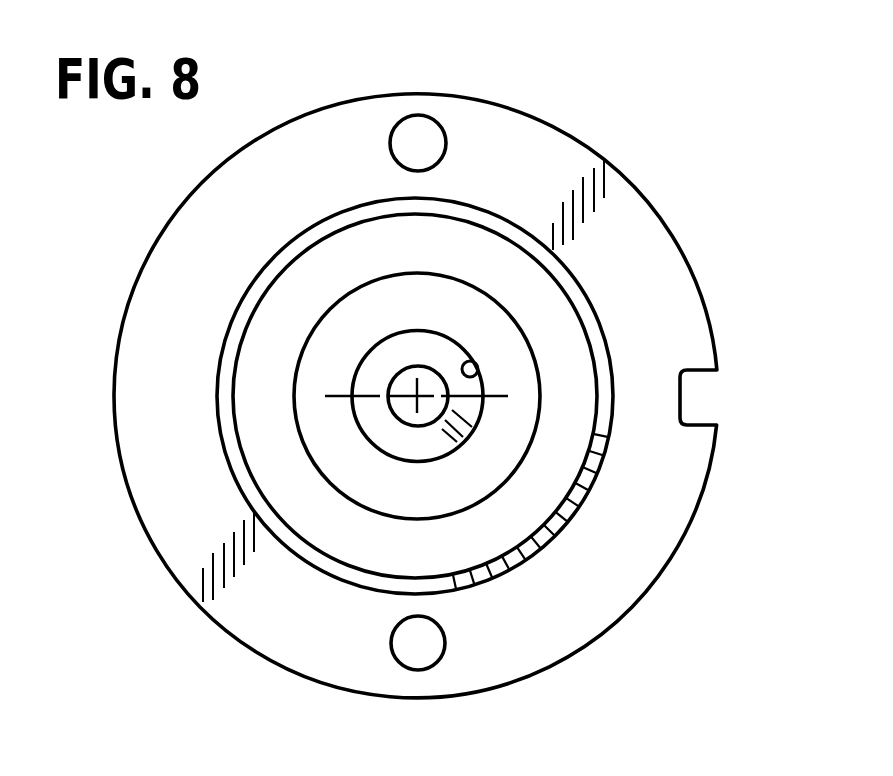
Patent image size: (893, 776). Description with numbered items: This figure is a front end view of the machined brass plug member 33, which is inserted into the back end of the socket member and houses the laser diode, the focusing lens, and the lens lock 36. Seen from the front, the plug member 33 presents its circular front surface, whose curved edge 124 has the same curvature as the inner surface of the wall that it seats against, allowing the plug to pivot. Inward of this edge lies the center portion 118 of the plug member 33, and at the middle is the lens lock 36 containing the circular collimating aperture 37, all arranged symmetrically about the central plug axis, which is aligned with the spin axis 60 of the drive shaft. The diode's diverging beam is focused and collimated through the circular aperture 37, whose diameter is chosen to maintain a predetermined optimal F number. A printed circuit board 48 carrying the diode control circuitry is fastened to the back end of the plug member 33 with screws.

The plug member 33 is at (650, 138).
The printed circuit board 48 is at (451, 92).
The center portion 118 is at (581, 284).
The edge 124 is at (314, 276).
The lens lock 36 is at (380, 482).
The spin axis 60 is at (410, 392).
The circular collimating aperture 37 is at (483, 377).